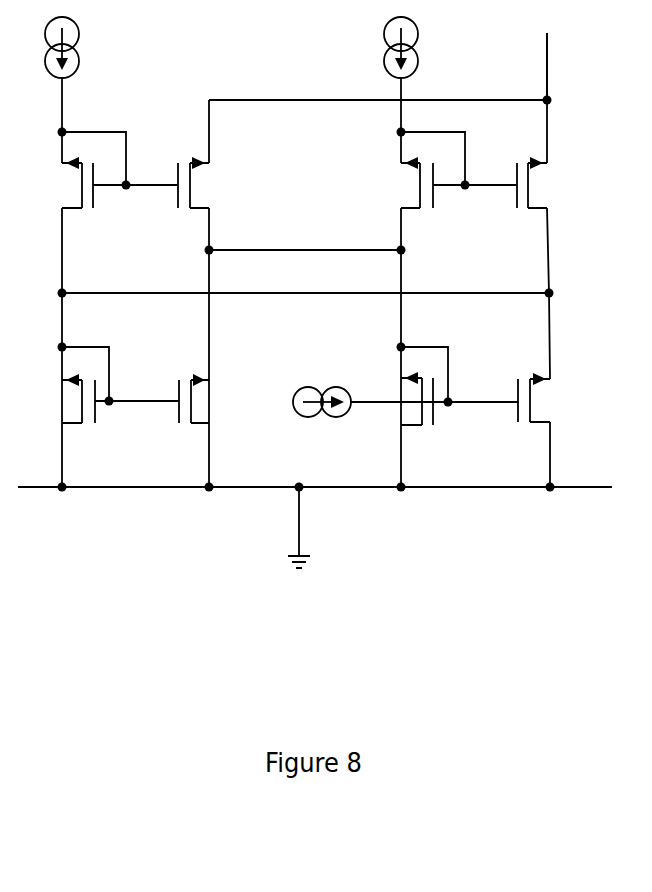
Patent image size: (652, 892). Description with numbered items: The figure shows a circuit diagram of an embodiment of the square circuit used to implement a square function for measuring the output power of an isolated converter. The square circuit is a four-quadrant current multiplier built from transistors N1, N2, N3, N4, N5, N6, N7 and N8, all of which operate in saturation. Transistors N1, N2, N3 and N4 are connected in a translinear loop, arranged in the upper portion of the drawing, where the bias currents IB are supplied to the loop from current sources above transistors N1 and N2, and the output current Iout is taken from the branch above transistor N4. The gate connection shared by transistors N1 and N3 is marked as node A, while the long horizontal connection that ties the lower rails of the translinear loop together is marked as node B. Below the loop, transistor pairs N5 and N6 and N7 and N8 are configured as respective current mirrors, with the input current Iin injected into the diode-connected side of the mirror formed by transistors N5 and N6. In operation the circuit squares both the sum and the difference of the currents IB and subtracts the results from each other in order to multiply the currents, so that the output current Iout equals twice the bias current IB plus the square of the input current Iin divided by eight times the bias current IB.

The transistor N1 is at (98, 310).
The transistor N2 is at (441, 310).
The transistor N3 is at (289, 296).
The transistor N4 is at (551, 225).
The transistor N5 is at (442, 385).
The transistor N6 is at (553, 392).
The transistor N7 is at (102, 384).
The transistor N8 is at (216, 399).
The node A is at (124, 208).
The node B is at (324, 293).
The current I_B IB is at (99, 23).
The input current I_in Iin is at (331, 370).
The output current I_out Iout is at (567, 20).